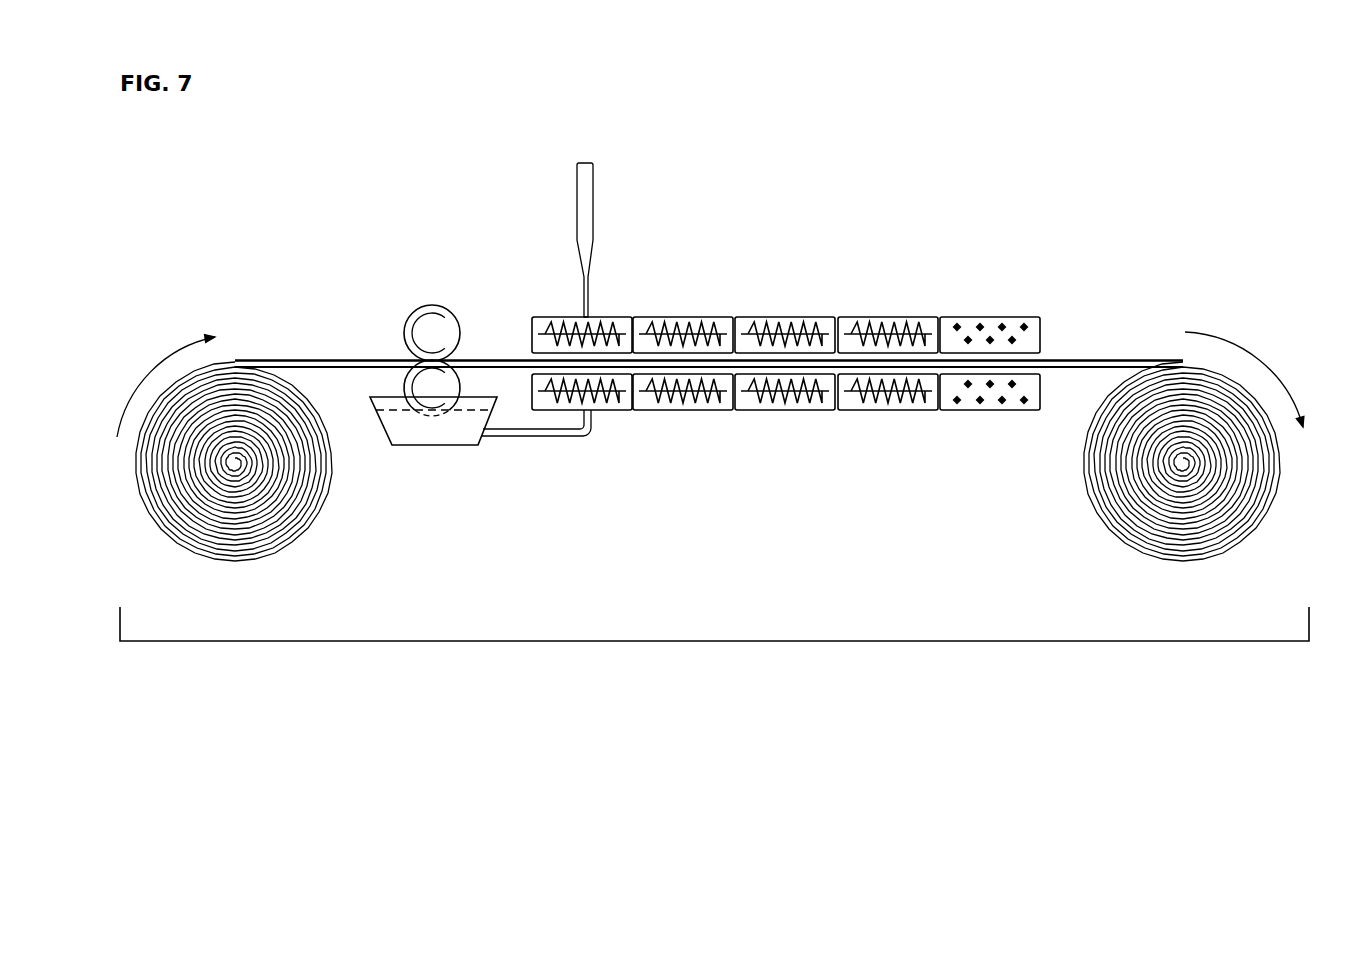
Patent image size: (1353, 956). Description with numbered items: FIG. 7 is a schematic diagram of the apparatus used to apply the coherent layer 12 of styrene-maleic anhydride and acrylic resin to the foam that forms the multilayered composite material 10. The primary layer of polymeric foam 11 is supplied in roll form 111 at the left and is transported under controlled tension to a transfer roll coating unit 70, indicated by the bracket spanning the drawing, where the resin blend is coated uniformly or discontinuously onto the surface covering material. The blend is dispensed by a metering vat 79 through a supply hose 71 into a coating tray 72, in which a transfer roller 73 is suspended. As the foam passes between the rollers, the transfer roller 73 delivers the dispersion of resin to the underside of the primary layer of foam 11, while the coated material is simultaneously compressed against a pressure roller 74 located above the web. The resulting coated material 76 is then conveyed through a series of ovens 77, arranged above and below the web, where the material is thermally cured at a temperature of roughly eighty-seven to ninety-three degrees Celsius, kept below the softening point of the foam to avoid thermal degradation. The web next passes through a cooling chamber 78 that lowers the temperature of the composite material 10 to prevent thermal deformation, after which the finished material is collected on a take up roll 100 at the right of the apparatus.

The multilayered composite material 10 is at (1090, 360).
The primary layer of polymeric foam 11 is at (265, 358).
The coherent layer 12 is at (1085, 370).
The transfer roll coating unit 70 is at (733, 641).
The supply hose 71 is at (540, 437).
The coating tray 72 is at (403, 446).
The transfer roller 73 is at (415, 372).
The pressure roller 74 is at (415, 310).
The coated material 76 is at (500, 360).
The ovens 77 is at (612, 317).
The cooling chamber 78 is at (1020, 317).
The metering vat 79 is at (578, 240).
The take up roll 100 is at (1105, 520).
The roll form of primary foam layer 111 is at (305, 530).